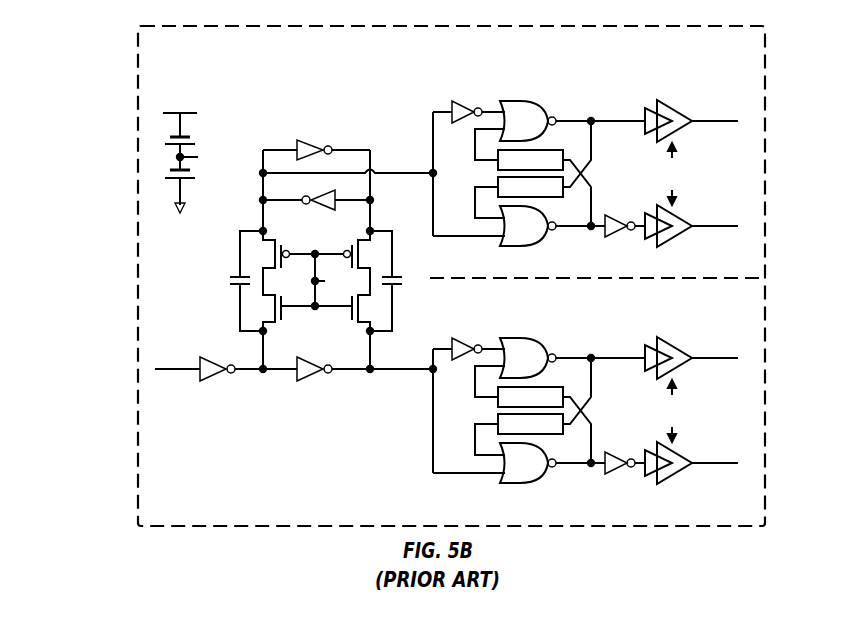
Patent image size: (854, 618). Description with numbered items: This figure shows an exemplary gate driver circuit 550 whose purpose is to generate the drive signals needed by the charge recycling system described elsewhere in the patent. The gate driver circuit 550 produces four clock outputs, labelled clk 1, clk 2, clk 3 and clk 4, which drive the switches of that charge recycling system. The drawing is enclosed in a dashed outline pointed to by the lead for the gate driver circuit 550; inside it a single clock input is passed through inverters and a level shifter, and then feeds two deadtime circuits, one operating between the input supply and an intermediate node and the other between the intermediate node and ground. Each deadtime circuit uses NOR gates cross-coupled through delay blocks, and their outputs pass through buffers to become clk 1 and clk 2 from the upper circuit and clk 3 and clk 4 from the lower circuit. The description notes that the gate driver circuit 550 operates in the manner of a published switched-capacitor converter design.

The gate driver circuit 550 is at (105, 48).
The clock output clk1 buffer 1 is at (691, 121).
The clock output clk2 buffer 2 is at (691, 226).
The clock output clk3 buffer 3 is at (691, 358).
The clock output clk4 buffer 4 is at (691, 463).